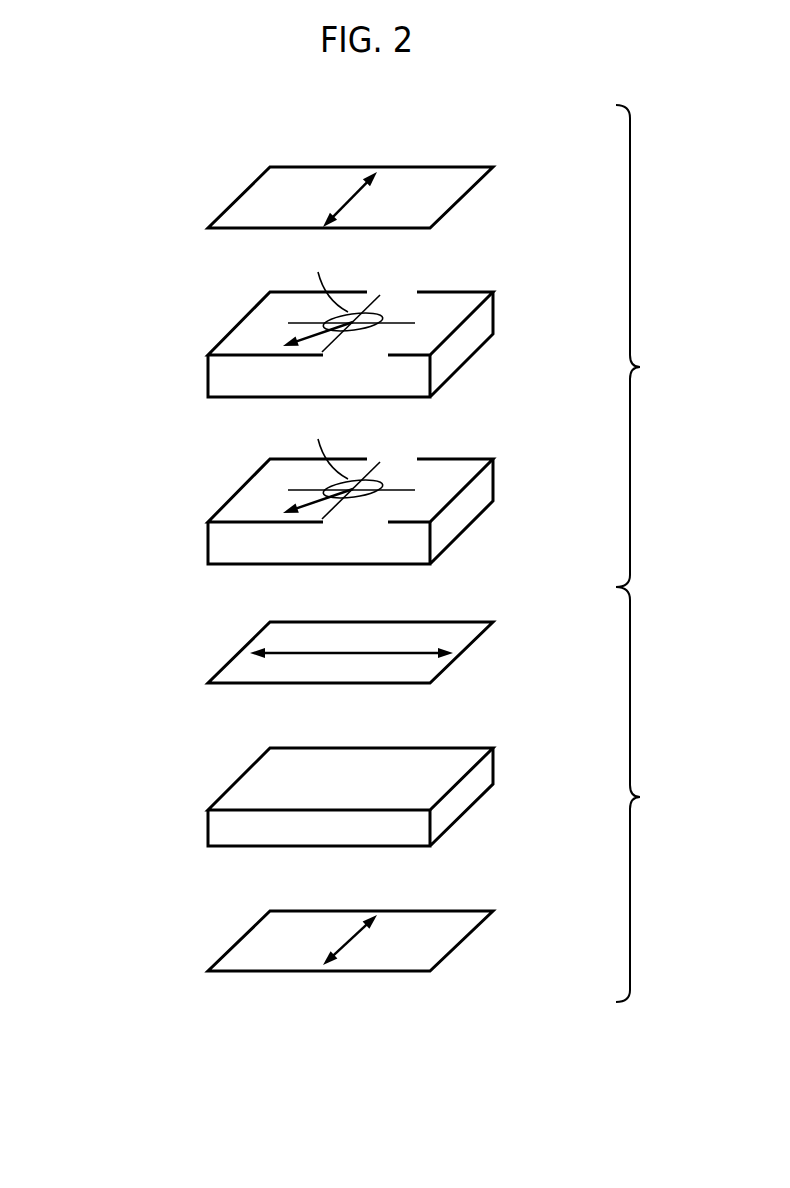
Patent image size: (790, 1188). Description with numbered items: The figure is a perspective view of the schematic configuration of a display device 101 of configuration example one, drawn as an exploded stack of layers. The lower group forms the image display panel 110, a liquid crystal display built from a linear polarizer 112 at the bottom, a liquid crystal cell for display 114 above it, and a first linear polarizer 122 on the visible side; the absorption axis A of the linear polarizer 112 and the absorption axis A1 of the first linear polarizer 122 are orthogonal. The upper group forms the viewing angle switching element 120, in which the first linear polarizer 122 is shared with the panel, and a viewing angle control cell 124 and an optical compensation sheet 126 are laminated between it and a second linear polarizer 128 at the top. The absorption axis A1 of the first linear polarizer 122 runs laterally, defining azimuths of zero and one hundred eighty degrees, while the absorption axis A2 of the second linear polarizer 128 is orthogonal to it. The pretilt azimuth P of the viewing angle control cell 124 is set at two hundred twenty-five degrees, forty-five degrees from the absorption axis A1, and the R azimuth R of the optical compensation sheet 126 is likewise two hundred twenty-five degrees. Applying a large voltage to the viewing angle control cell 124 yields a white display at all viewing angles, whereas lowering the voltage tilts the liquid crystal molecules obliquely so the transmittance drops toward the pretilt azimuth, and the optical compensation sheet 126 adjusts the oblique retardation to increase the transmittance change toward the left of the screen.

The display device 101 is at (150, 130).
The image display panel 110 is at (650, 794).
The linear polarizer 112 is at (467, 911).
The liquid crystal cell for display 114 is at (467, 748).
The viewing angle switching element 120 is at (651, 346).
The first linear polarizer 122 is at (467, 622).
The viewing angle control cell 124 is at (467, 459).
The optical compensation sheet 126 is at (467, 292).
The second linear polarizer 128 is at (467, 167).
The absorption axis A is at (342, 942).
The absorption axis of the first linear polarizer A1 is at (307, 655).
The absorption axis of the second linear polarizer A2 is at (357, 190).
The pretilt azimuth P is at (312, 502).
The R azimuth R is at (312, 335).